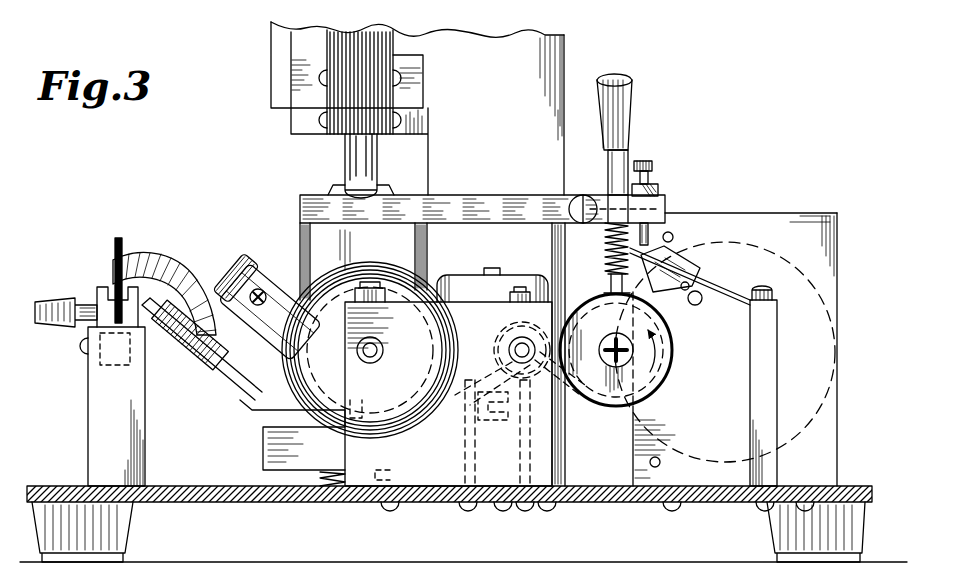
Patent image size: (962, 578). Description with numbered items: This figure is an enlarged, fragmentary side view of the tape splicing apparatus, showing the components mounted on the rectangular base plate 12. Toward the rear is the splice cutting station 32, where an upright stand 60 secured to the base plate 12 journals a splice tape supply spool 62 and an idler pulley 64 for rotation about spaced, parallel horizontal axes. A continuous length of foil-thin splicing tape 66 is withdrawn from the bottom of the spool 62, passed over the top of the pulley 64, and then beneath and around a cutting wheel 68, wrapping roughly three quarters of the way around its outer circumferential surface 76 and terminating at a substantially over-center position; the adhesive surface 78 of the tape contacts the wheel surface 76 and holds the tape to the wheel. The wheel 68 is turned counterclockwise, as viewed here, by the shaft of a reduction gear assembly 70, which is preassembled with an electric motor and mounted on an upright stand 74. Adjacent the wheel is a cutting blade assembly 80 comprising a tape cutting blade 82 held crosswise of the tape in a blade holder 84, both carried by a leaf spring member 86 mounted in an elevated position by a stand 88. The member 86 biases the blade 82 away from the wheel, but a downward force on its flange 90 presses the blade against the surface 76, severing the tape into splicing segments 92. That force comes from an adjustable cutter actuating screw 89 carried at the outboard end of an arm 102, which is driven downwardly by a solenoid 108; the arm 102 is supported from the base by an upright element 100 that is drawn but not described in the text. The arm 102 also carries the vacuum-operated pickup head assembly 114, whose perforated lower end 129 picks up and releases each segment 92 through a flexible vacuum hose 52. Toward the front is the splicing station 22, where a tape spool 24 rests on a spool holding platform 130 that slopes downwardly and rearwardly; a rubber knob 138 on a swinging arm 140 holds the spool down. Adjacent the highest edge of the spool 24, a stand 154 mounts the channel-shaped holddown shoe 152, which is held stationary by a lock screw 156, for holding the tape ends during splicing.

The base plate 12 is at (862, 486).
The splicing station 22 is at (223, 260).
The tape spool 24 is at (232, 388).
The splice cutting station 32 is at (741, 191).
The flexible vacuum hose 52 is at (633, 104).
The upright stand 60 is at (452, 466).
The splice tape supply spool 62 is at (333, 313).
The idler pulley 64 is at (497, 331).
The splicing tape 66 is at (480, 424).
The cutting wheel 68 is at (672, 356).
The reduction gear assembly 70 is at (840, 297).
The upright stand 74 is at (842, 240).
The outer circumferential surface 76 is at (596, 300).
The adhesive surface 78 is at (660, 392).
The cutting blade assembly 80 is at (712, 281).
The tape cutting blade 82 is at (652, 294).
The blade holder 84 is at (698, 293).
The leaf spring member 86 is at (728, 285).
The stand 88 is at (770, 384).
The cutter actuating screw 89 is at (648, 170).
The flange 90 is at (660, 223).
The splicing segments 92 is at (615, 354).
The column 100 is at (428, 244).
The arm 102 is at (490, 197).
The solenoid 108 is at (423, 56).
The pickup head assembly 114 is at (599, 184).
The lower end 129 is at (602, 258).
The spool holding platform 130 is at (184, 360).
The rubber knob 138 is at (233, 272).
The arm 140 is at (279, 290).
The holddown shoe 152 is at (112, 285).
The stand 154 is at (105, 430).
The lock screw 156 is at (78, 347).